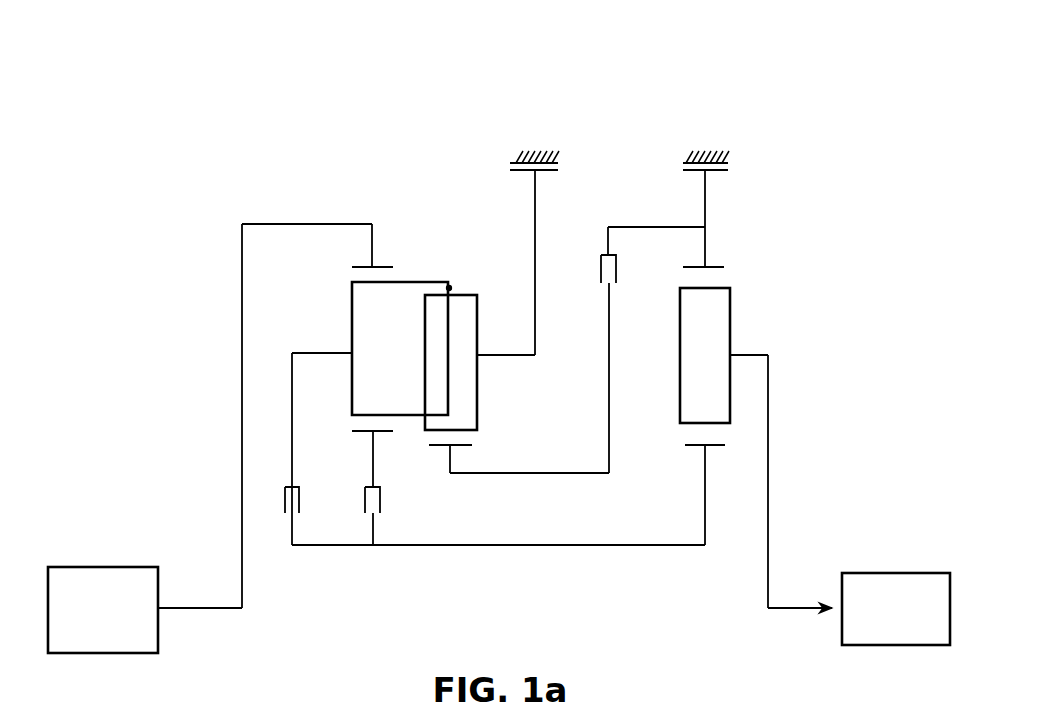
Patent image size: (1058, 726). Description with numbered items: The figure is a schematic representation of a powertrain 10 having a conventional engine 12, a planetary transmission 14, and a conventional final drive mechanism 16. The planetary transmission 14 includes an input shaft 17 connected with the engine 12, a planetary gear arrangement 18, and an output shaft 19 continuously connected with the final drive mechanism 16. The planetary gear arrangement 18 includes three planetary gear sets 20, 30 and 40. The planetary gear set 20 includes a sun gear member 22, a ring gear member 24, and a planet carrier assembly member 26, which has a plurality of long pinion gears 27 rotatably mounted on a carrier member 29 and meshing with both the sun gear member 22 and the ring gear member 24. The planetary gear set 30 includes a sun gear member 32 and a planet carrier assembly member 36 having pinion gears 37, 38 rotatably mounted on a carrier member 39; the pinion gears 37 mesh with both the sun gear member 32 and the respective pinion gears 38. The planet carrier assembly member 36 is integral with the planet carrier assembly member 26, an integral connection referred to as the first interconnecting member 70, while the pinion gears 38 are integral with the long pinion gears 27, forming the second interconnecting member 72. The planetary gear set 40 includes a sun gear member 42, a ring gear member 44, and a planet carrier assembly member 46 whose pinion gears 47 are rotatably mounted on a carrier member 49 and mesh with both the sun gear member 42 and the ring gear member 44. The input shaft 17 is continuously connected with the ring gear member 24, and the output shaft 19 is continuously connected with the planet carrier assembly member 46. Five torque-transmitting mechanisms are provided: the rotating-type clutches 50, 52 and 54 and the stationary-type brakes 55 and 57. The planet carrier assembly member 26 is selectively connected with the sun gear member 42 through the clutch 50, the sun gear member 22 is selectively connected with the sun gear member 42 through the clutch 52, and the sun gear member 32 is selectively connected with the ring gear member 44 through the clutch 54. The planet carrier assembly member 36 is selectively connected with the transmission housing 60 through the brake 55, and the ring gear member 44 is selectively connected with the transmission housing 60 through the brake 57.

The powertrain 10 is at (152, 296).
The engine 12 is at (122, 546).
The planetary transmission 14 is at (378, 90).
The final drive mechanism 16 is at (882, 552).
The input shaft 17 is at (198, 612).
The planetary gear arrangement 18 is at (652, 90).
The output shaft 19 is at (798, 612).
The planetary gear set 20 is at (365, 440).
The sun gear member 22 is at (352, 450).
The ring gear member 24 is at (388, 264).
The planet carrier assembly member 26 is at (336, 346).
The long pinion gears 27 is at (400, 348).
The carrier member 29 is at (312, 352).
The planetary gear set 30 is at (438, 450).
The sun gear member 32 is at (458, 448).
The planet carrier assembly member 36 is at (488, 368).
The pinion gears 37 is at (451, 362).
The pinion gears 38 is at (450, 290).
The carrier member 39 is at (509, 357).
The planetary gear set 40 is at (697, 452).
The sun gear member 42 is at (685, 460).
The ring gear member 44 is at (726, 262).
The planet carrier assembly member 46 is at (748, 345).
The pinion gears 47 is at (705, 355).
The carrier member 49 is at (758, 353).
The clutch 50 is at (302, 522).
The clutch 52 is at (384, 522).
The clutch 54 is at (624, 252).
The brake 55 is at (506, 163).
The brake 57 is at (732, 163).
The transmission housing 60 is at (516, 160).
The first interconnecting member 70 is at (413, 368).
The second interconnecting member 72 is at (432, 282).